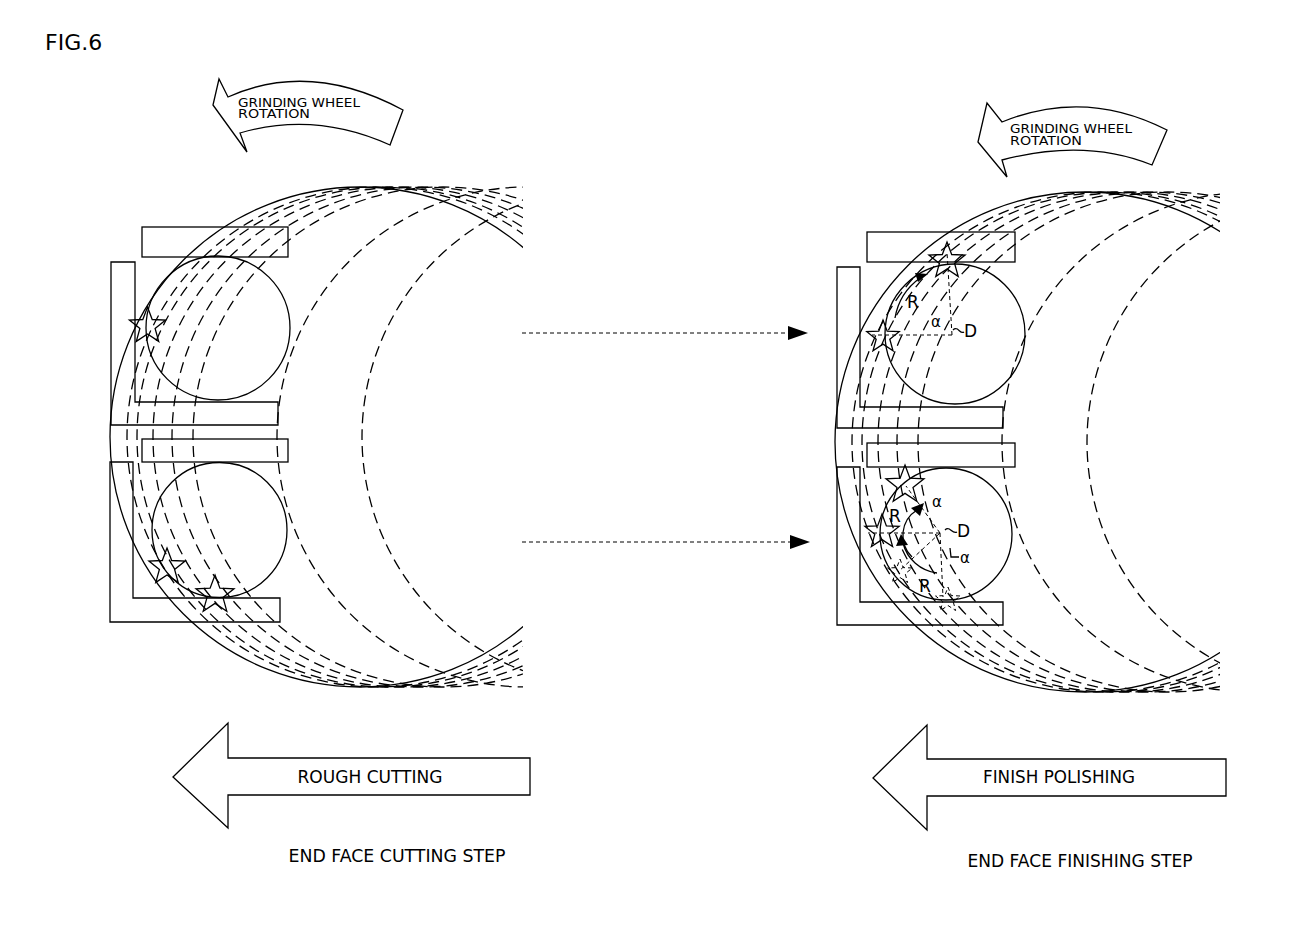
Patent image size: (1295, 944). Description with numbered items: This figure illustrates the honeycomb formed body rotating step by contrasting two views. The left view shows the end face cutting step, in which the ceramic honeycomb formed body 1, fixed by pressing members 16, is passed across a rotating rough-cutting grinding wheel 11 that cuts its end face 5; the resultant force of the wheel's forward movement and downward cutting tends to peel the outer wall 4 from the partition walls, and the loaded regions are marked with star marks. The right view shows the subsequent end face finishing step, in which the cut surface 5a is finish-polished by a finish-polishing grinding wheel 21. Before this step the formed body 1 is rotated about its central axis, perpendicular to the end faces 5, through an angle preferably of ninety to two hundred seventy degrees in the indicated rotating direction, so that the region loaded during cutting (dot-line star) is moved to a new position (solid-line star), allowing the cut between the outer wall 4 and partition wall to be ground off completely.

The honeycomb formed body 1 is at (626, 428).
The outer wall 4 is at (272, 280).
The end face 5 is at (598, 428).
The cut surface 5a is at (598, 428).
The rough-cutting grinding wheel 11 is at (392, 250).
The pressing member 16 is at (165, 223).
The finish-polishing grinding wheel 21 is at (1188, 225).